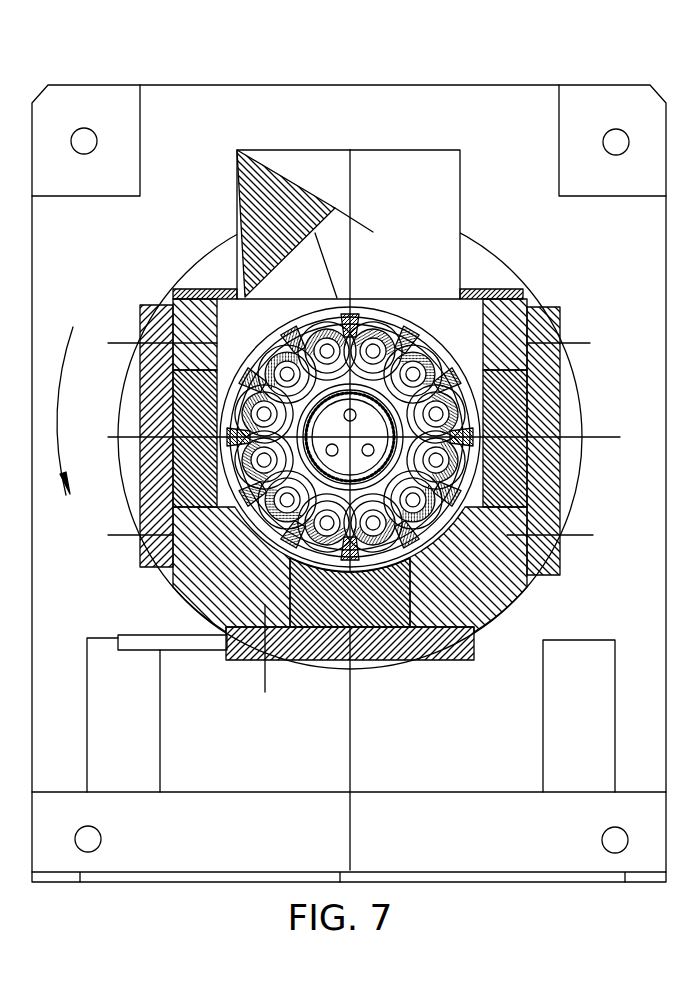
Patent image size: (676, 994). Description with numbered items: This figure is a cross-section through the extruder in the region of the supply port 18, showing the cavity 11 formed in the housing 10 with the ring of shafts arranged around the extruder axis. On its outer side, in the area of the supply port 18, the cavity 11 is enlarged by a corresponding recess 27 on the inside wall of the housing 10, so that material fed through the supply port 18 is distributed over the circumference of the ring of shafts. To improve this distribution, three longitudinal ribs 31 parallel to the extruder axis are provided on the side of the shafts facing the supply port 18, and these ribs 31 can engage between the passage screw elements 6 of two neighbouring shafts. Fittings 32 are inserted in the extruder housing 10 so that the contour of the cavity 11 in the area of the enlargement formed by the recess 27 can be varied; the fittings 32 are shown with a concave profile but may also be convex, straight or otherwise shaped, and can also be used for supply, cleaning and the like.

The supply port 18 is at (369, 168).
The passage screw elements 6 is at (313, 344).
The longitudinal ribs 31 is at (238, 378).
The fittings 32 is at (171, 428).
The cavity 11 is at (560, 472).
The housing 10 is at (503, 590).
The recess 27 is at (253, 518).